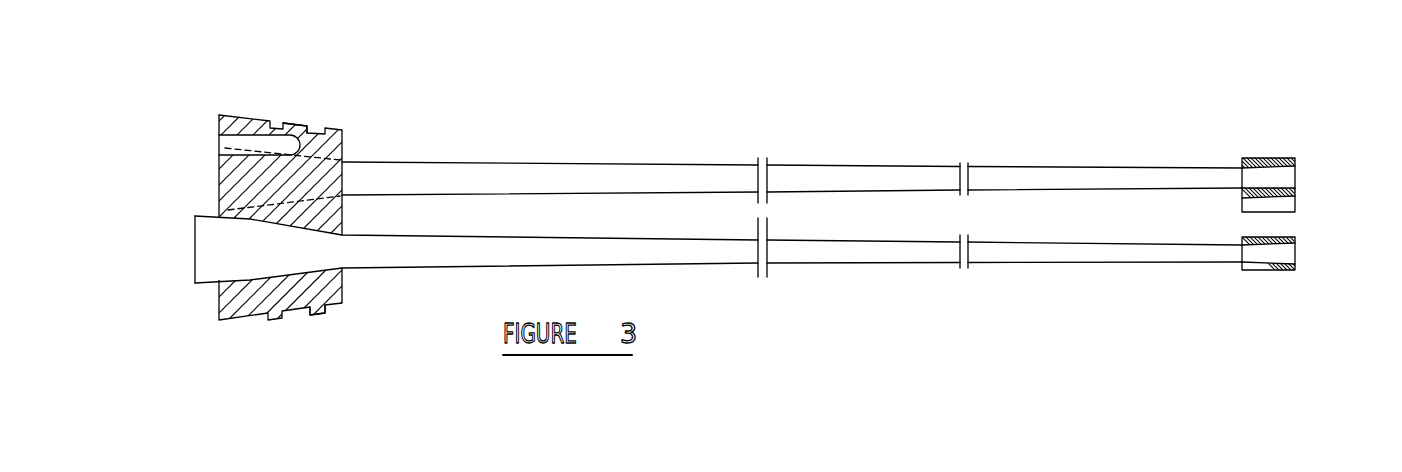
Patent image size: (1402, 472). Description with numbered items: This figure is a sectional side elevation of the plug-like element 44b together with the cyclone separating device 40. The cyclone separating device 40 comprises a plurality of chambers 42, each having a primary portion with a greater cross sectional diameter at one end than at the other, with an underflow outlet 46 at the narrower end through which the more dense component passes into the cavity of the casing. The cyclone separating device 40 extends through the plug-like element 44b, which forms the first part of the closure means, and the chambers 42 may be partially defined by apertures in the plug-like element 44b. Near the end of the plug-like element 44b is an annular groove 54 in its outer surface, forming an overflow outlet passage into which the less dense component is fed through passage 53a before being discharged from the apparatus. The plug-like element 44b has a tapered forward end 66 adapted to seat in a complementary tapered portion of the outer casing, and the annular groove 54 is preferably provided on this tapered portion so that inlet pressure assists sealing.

The cyclone separating device 40 is at (706, 219).
The chambers 42 is at (730, 172).
The plug-like element 44b is at (218, 185).
The underflow outlet 46 is at (1295, 172).
The passage 53a is at (248, 142).
The annular groove 54 is at (293, 122).
The tapered forward end 66 is at (327, 307).